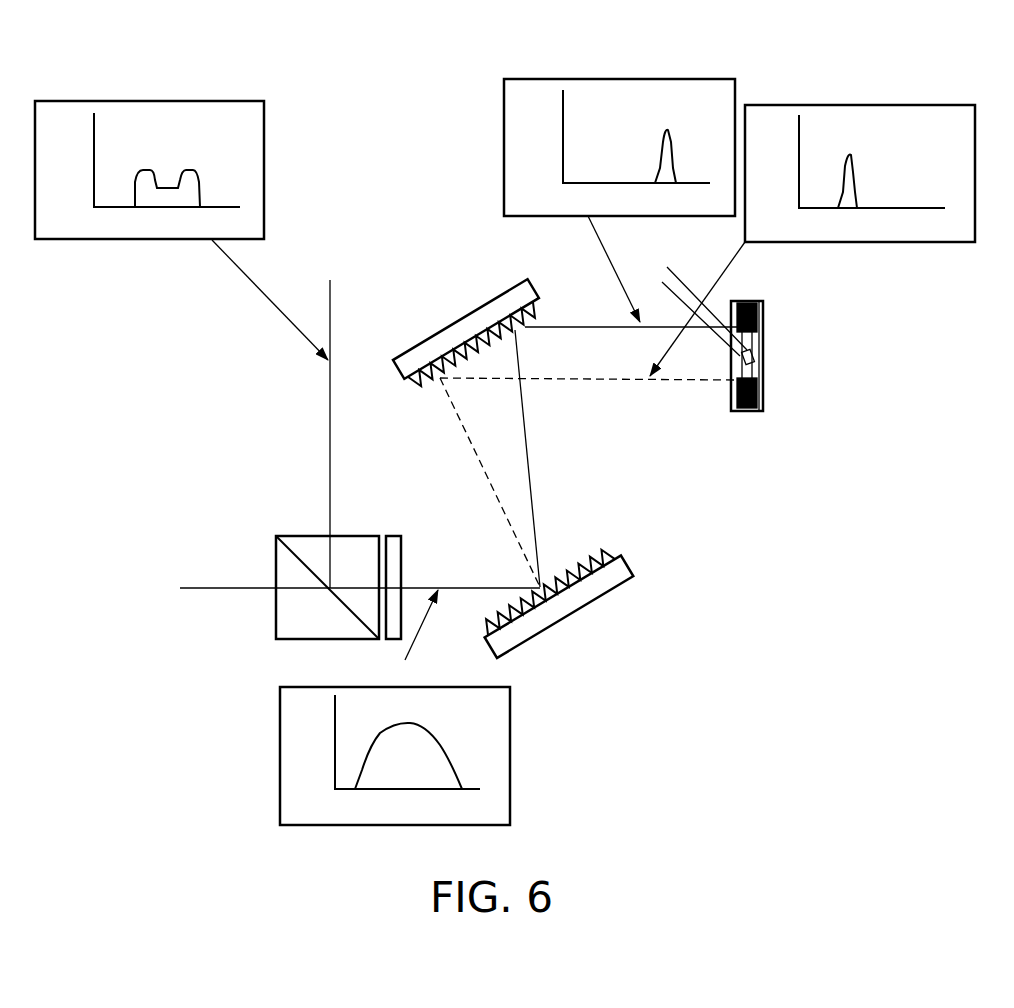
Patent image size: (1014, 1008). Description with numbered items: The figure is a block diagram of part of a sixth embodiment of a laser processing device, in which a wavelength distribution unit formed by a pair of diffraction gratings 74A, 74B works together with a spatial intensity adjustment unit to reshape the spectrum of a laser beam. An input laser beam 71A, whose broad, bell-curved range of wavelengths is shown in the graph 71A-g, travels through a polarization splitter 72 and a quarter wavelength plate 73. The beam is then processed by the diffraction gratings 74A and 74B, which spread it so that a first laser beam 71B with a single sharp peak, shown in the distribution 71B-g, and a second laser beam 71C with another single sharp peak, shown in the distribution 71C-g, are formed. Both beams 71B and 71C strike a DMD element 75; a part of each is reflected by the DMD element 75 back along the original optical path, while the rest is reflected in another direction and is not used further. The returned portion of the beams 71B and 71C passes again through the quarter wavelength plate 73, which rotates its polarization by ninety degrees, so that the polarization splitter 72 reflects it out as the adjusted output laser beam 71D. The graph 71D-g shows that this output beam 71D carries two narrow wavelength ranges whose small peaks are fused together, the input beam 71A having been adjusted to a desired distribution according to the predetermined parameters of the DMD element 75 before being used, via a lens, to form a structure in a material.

The input laser beam 71A is at (202, 587).
The first laser beam 71B is at (607, 383).
The second laser beam 71C is at (570, 325).
The output laser beam 71D is at (329, 412).
The graph 71A-g is at (510, 757).
The distribution 71B-g is at (910, 105).
The distribution 71C-g is at (668, 78).
The graph 71D-g is at (265, 165).
The polarization splitter 72 is at (283, 617).
The ¼ wavelength plate 73 is at (395, 533).
The diffraction grating 74A is at (468, 315).
The diffraction grating 74B is at (563, 610).
The DMD element 75 is at (743, 412).